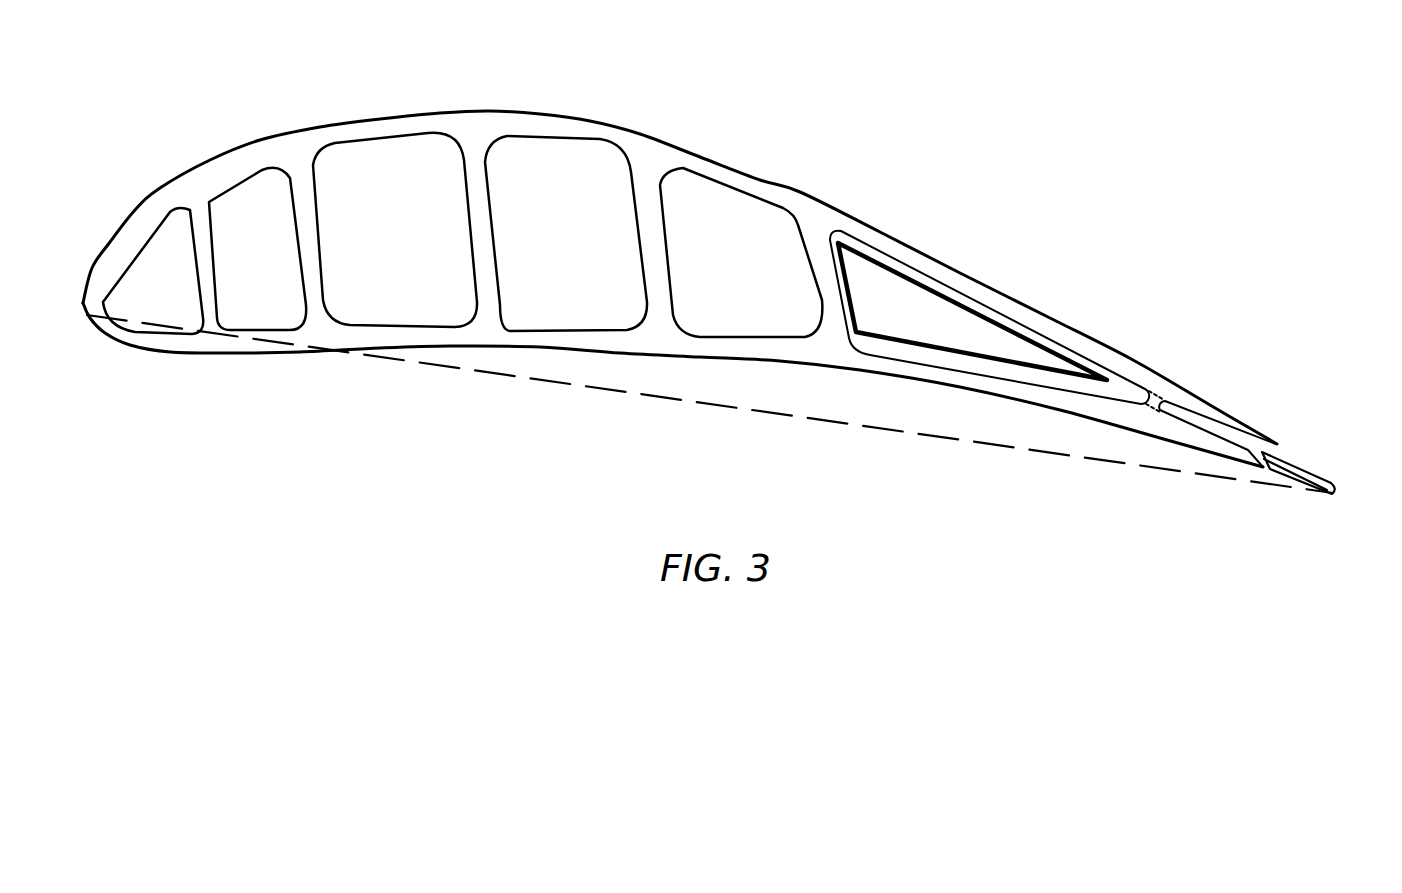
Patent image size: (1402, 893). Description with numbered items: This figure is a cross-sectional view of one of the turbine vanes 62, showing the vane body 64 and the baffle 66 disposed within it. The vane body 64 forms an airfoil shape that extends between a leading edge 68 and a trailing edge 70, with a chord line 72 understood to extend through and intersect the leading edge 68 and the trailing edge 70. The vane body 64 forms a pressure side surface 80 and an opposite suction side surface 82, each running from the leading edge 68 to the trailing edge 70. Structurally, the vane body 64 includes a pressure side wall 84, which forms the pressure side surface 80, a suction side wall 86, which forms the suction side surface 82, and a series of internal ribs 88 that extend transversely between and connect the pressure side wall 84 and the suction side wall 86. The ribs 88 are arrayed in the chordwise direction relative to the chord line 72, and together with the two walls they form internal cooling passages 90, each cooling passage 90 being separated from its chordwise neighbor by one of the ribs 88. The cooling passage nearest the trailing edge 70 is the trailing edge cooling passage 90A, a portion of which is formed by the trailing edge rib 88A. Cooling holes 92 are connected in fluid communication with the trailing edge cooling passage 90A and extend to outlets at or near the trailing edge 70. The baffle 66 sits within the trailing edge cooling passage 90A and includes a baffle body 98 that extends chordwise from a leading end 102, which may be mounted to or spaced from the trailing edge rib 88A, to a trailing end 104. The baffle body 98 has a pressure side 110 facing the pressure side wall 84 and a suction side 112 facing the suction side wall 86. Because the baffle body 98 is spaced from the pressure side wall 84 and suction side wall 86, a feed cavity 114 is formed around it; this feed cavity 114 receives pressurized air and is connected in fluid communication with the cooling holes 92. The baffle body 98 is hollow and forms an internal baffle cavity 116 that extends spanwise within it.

The vane 62 is at (952, 142).
The vane body 64 is at (650, 160).
The baffle 66 is at (950, 348).
The leading edge 68 is at (83, 303).
The trailing edge 70 is at (1335, 490).
The chord line 72 is at (1152, 467).
The pressure side surface 80 is at (710, 357).
The suction side surface 82 is at (530, 113).
The pressure side wall 84 is at (658, 333).
The suction side wall 86 is at (380, 131).
The internal ribs 88 is at (200, 242).
The trailing edge rib 88A is at (823, 265).
The internal cooling passages 90 is at (166, 301).
The trailing edge cooling passage 90A is at (985, 292).
The cooling holes 92 is at (1230, 413).
The baffle body 98 is at (1040, 338).
The leading end 102 is at (843, 308).
The trailing end 104 is at (1107, 380).
The pressure side 110 is at (1030, 363).
The suction side 112 is at (1010, 322).
The feed cavity 114 is at (927, 282).
The baffle cavity 116 is at (930, 321).